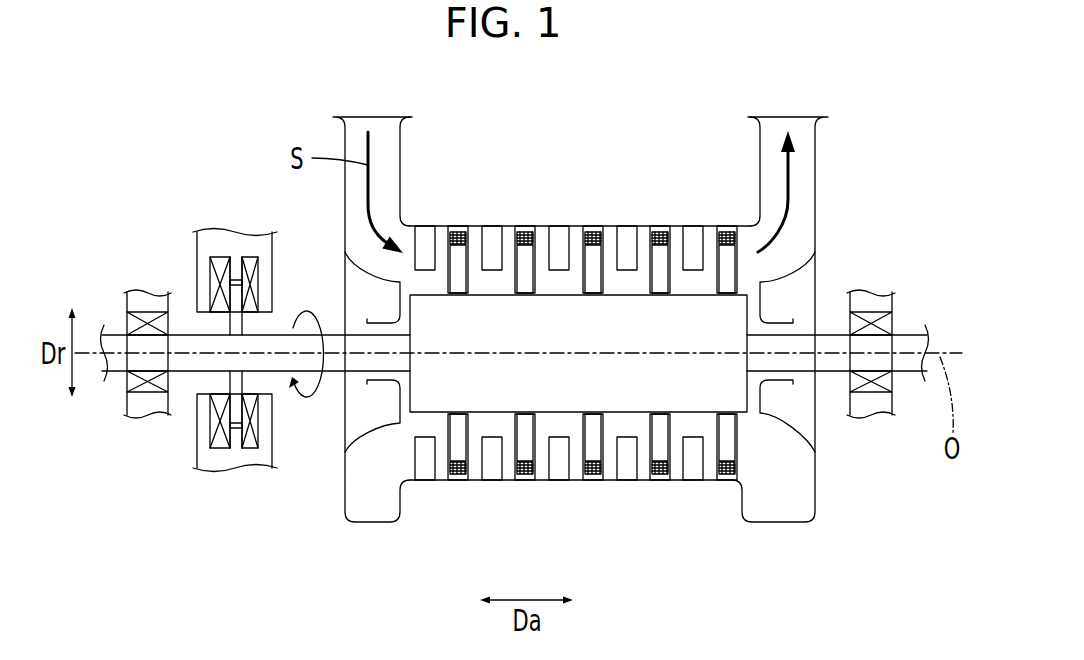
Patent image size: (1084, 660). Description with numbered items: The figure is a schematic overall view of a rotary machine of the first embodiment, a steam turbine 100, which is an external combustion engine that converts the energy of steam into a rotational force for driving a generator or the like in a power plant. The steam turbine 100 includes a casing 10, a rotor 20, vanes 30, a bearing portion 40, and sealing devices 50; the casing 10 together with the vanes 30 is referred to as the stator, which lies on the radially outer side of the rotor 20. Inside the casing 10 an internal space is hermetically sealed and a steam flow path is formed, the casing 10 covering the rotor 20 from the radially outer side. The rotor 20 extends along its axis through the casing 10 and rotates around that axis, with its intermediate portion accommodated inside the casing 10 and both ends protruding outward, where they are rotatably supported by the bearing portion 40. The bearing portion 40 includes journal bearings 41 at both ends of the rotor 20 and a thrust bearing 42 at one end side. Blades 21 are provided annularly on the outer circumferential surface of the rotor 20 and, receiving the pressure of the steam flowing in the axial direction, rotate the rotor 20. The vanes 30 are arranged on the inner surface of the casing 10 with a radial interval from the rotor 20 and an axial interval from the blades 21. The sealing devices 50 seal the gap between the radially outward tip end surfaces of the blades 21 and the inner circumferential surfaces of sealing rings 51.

The steam turbine 100 is at (870, 113).
The casing 10 is at (607, 226).
The rotor 20 is at (707, 300).
The blades 21 is at (458, 450).
The vanes 30 is at (427, 232).
The bearing portion 40 is at (214, 172).
The journal bearings 41 is at (114, 295).
The thrust bearing 42 is at (187, 250).
The sealing devices 50 is at (443, 487).
The sealing rings 51 is at (458, 232).